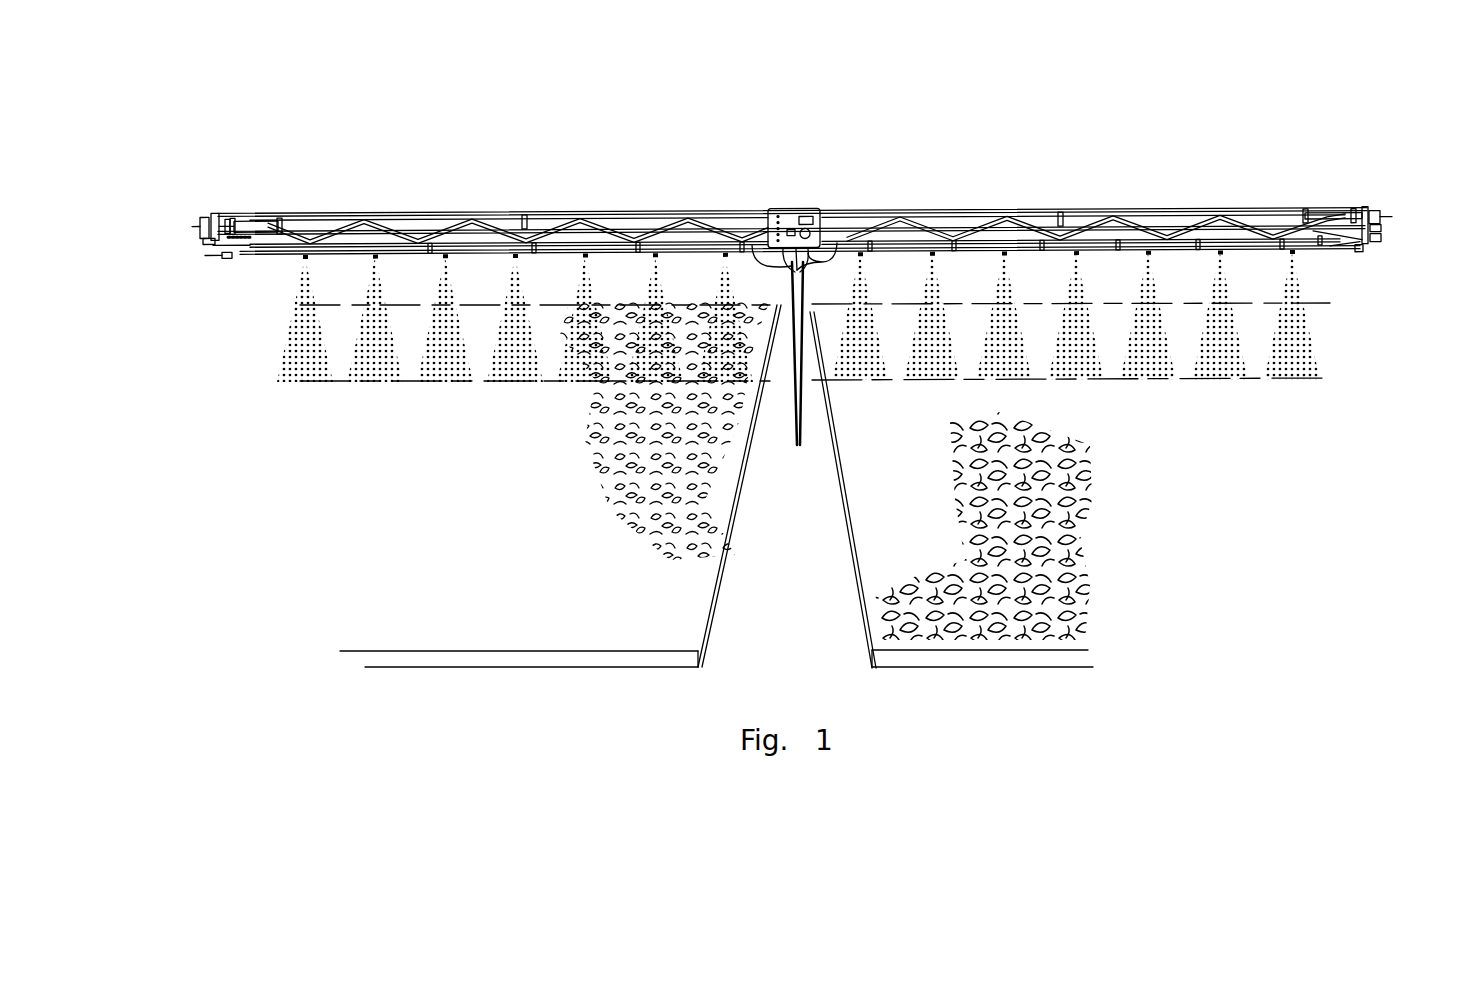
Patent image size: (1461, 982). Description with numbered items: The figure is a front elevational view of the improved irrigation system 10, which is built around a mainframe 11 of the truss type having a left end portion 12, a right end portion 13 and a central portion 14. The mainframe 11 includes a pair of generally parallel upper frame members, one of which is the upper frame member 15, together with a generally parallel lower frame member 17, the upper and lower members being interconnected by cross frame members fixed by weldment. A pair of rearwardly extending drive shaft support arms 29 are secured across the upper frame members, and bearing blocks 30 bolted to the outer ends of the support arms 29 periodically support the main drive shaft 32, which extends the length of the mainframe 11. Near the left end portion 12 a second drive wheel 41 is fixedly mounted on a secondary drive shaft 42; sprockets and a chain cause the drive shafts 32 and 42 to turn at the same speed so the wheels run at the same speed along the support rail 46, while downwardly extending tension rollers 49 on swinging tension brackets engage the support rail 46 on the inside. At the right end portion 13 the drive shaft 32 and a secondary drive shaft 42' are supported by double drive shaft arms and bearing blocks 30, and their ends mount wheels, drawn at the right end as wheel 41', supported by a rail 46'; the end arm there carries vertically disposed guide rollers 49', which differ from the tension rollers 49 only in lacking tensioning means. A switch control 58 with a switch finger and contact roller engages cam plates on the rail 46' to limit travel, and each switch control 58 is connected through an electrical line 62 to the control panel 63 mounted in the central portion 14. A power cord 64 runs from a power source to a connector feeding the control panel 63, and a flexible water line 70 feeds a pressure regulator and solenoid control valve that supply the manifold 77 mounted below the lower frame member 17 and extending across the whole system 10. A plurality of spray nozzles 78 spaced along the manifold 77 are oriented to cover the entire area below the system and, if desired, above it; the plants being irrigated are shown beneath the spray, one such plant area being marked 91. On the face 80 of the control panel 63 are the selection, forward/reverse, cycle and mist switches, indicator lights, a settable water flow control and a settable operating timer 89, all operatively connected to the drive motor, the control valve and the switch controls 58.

The irrigation system 10 is at (998, 108).
The mainframe 11 is at (905, 193).
The left end portion 12 is at (297, 187).
The right end portion 13 is at (1292, 182).
The central portion 14 is at (807, 155).
The upper frame member 15 is at (653, 213).
The lower frame member 17 is at (598, 245).
The drive shaft support arms 29 is at (522, 220).
The bearing blocks 30 is at (530, 220).
The main drive shaft 32 is at (425, 222).
The second drive wheel 41 is at (204, 204).
The secondary drive shaft 42 is at (250, 200).
The support rail 46 is at (178, 252).
The tension rollers 49 is at (208, 271).
The secondary drive shaft 42' is at (1332, 192).
The right end plate 41' is at (1395, 202).
The rail 46' is at (1413, 242).
The guide rollers 49' is at (1348, 259).
The switch control 58 is at (1374, 245).
The electrical line 62 is at (1004, 236).
The control panel 63 is at (808, 212).
The power cord 64 is at (837, 243).
The flexible water line 70 is at (752, 245).
The manifold 77 is at (516, 258).
The spray nozzles 78 is at (308, 257).
The face 80 is at (790, 218).
The operating timer 89 is at (1080, 483).
The treated crop plants 91 is at (1000, 343).